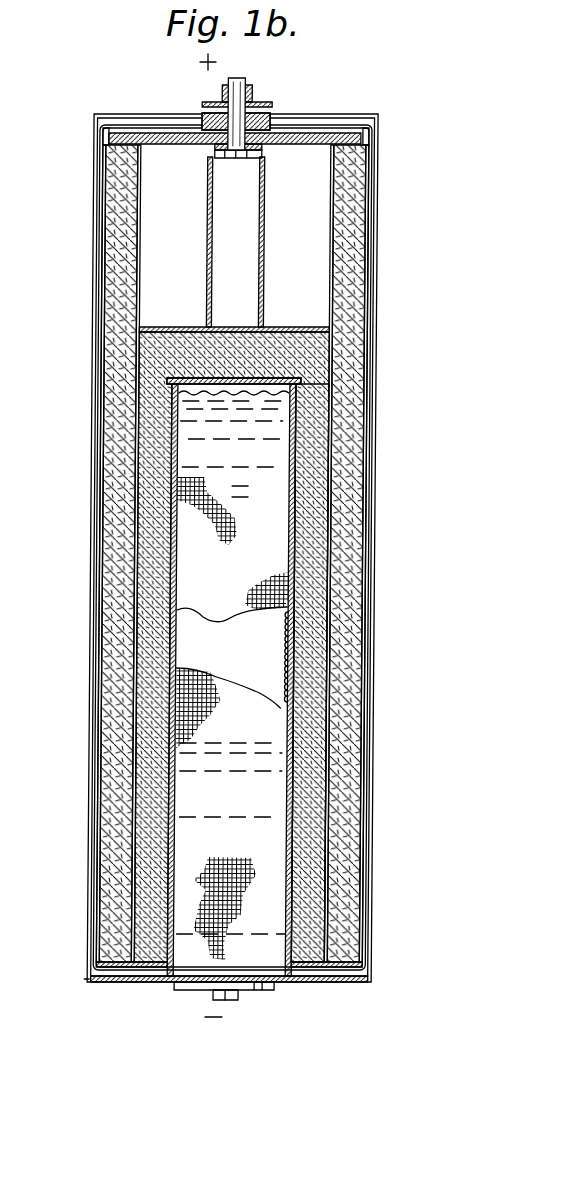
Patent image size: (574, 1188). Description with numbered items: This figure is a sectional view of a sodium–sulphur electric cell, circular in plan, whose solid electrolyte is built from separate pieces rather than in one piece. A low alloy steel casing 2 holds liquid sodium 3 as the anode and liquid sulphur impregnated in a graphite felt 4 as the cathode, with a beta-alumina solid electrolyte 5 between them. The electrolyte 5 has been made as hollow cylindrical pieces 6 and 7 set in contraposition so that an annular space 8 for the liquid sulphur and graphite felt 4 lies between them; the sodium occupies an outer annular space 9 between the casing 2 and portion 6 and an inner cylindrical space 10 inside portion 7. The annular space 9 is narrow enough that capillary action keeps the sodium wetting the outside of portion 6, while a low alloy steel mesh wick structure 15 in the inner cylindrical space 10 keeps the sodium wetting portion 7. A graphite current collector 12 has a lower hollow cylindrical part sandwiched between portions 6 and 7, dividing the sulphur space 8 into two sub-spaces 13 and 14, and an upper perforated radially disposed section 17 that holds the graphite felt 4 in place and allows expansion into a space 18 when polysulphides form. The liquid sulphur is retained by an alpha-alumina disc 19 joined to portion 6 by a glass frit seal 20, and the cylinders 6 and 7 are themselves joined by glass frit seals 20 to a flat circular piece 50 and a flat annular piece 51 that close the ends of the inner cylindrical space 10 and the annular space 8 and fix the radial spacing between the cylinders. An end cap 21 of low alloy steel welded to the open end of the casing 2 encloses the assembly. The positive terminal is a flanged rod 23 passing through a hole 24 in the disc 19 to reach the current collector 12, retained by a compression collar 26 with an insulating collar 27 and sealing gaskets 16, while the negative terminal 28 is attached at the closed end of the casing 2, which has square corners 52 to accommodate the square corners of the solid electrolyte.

The casing 2 is at (96, 444).
The liquid sodium 3 is at (262, 748).
The graphite felt 4 is at (330, 564).
The solid electrolyte 5 is at (370, 278).
The hollow cylindrical portion 6 is at (366, 478).
The hollow cylindrical portion 7 is at (304, 515).
The annular space 8 is at (344, 779).
The outer annular space 9 is at (101, 536).
The inner cylindrical space 10 is at (254, 637).
The current collector 12 is at (176, 660).
The sub-space 13 is at (109, 572).
The sub-space 14 is at (141, 608).
The wick structure 15 is at (294, 666).
The sealing gaskets 16 is at (214, 152).
The perforated radially disposed section 17 is at (148, 322).
The space 18 is at (304, 232).
The alpha-alumina disc 19 is at (347, 162).
The glass frit seal 20 is at (124, 125).
The end cap 21 is at (346, 128).
The flanged rod 23 is at (247, 80).
The hole 24 is at (273, 136).
The compression collar 26 is at (206, 104).
The insulating collar 27 is at (203, 115).
The negative terminal 28 is at (233, 1002).
The flat circular piece 50 is at (304, 360).
The flat annular piece 51 is at (346, 978).
The square corners 52 is at (87, 983).